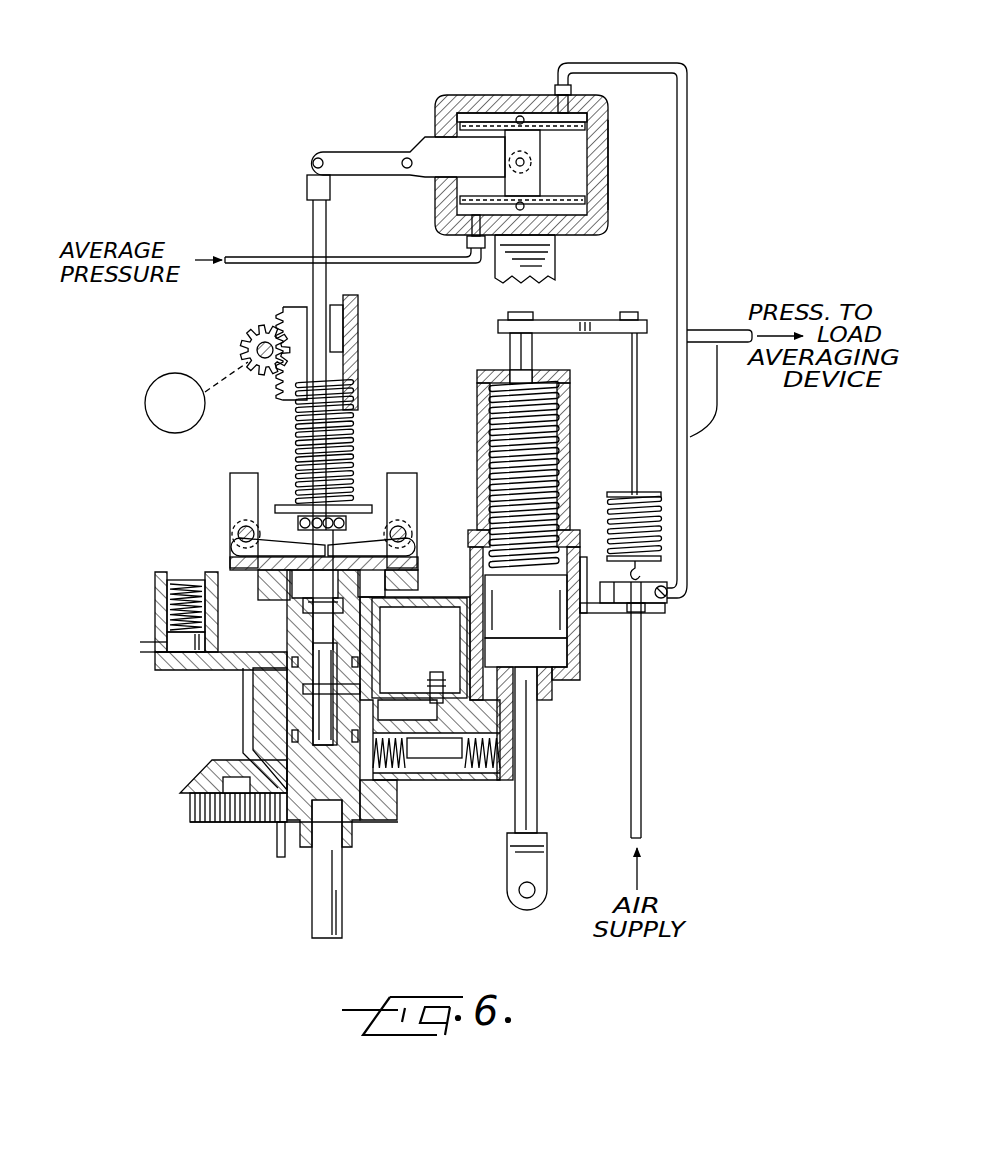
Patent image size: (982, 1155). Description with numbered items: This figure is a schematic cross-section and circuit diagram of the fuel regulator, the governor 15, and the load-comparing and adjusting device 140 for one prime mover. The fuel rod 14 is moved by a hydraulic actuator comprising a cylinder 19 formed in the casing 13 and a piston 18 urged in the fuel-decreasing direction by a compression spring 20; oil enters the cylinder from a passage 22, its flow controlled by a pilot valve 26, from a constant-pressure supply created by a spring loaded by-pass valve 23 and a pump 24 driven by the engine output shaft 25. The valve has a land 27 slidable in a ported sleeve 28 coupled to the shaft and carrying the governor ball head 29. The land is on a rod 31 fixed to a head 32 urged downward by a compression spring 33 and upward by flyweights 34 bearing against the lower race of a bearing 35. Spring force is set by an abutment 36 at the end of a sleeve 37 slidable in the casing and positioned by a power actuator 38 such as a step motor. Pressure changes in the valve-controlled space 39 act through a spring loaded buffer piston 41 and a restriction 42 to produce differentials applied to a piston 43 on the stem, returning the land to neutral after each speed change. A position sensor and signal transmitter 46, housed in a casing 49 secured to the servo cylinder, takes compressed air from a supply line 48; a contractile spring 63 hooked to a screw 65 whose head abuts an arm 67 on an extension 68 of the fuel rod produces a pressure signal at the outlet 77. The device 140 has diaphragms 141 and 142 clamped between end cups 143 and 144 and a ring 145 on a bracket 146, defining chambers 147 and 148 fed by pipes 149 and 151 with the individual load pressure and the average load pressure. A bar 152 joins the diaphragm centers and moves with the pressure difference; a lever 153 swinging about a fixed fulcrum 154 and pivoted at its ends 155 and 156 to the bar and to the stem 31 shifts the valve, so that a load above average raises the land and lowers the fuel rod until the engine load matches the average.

The casing 13 is at (400, 590).
The fuel rod 14 is at (542, 765).
The governor 15 is at (405, 790).
The piston 18 is at (538, 618).
The cylinder 19 is at (560, 657).
The compression spring 20 is at (556, 473).
The passage 22 is at (500, 690).
The spring loaded by-pass valve 23 is at (156, 600).
The pump 24 is at (257, 826).
The engine output shaft 25 is at (313, 918).
The pilot valve 26 is at (297, 712).
The land 27 is at (312, 690).
The ported sleeve 28 is at (292, 645).
The governor ball head 29 is at (238, 552).
The rod 31 is at (326, 298).
The head 32 is at (283, 505).
The compression spring 33 is at (300, 437).
The flyweights 34 is at (233, 492).
The bearing 35 is at (325, 525).
The abutment 36 is at (350, 372).
The sleeve 37 is at (345, 328).
The power actuator 38 is at (148, 382).
The valve-controlled space 39 is at (380, 640).
The buffer piston 41 is at (450, 758).
The restriction 42 is at (425, 692).
The piston 43 is at (304, 608).
The position sensor and signal transmitter 46 is at (679, 612).
The supply line 48 is at (643, 772).
The casing 49 is at (668, 582).
The contractile spring 63 is at (655, 540).
The screw 65 is at (631, 428).
The arm 67 is at (590, 334).
The extension 68 is at (512, 360).
The outlet 77 is at (717, 418).
The load comparing device 140 is at (412, 98).
The diaphragm 141 is at (460, 128).
The diaphragm 142 is at (450, 225).
The end cup 143 is at (518, 93).
The end cup 144 is at (563, 238).
The ring 145 is at (606, 165).
The bracket 146 is at (548, 272).
The chamber 147 is at (575, 128).
The chamber 148 is at (570, 210).
The pipe 149 is at (690, 68).
The pipe 151 is at (258, 256).
The bar 152 is at (535, 188).
The lever 153 is at (336, 150).
The fulcrum 154 is at (405, 158).
The lever end 155 is at (516, 163).
The lever end 156 is at (313, 160).